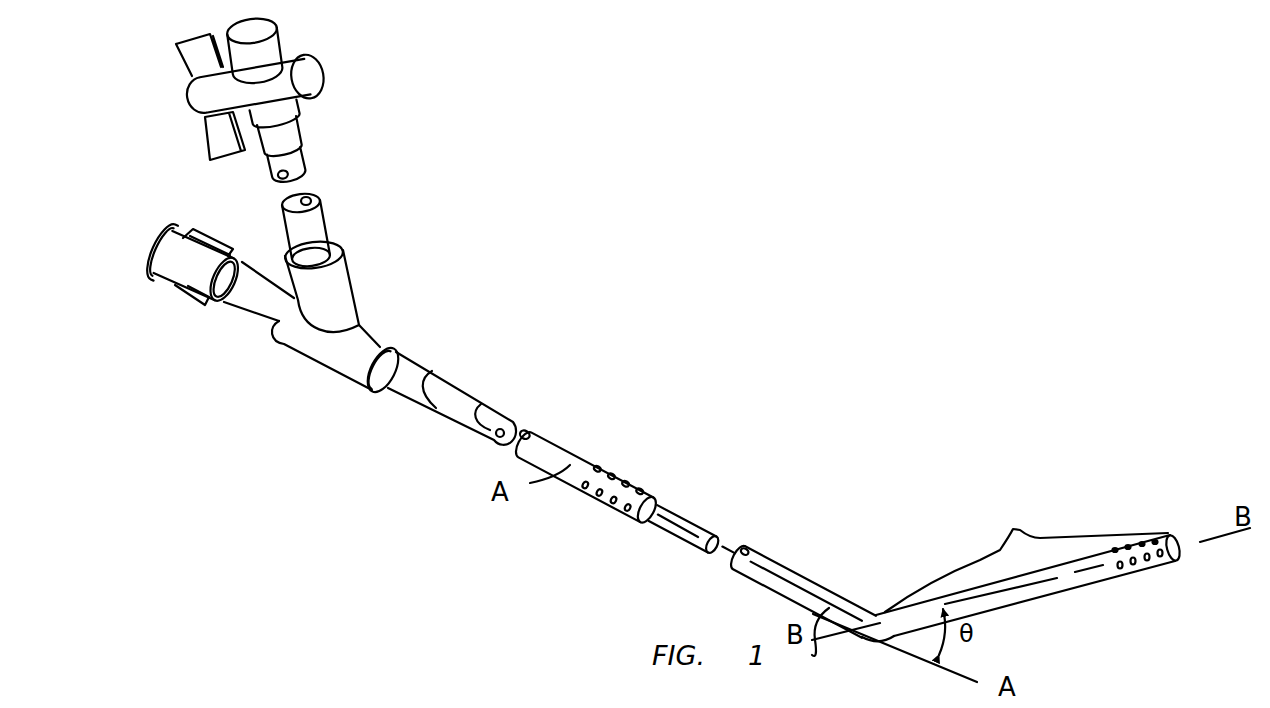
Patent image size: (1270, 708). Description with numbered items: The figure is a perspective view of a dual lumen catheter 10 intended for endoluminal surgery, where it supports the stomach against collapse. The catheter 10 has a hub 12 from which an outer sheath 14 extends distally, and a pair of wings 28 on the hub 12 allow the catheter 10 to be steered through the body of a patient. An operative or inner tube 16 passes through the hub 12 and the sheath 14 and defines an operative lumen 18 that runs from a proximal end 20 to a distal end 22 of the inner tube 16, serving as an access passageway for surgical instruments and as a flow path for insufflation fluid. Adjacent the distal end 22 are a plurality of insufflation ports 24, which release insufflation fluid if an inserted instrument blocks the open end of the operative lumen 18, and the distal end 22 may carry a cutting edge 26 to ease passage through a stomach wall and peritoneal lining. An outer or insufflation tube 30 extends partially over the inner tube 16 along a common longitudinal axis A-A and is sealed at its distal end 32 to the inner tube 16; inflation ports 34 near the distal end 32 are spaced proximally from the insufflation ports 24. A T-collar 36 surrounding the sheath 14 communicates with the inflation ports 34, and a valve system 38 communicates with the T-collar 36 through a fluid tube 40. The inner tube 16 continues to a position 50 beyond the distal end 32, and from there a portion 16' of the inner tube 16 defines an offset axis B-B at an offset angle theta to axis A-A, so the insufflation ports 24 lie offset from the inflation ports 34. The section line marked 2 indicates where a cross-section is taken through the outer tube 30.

The dual lumen catheter 10 is at (612, 72).
The hub 12 is at (172, 270).
The outer sheath 14 is at (258, 310).
The inner tube 16 is at (984, 610).
The portion of the inner tube 16' is at (1026, 553).
The operative lumen 18 is at (1185, 542).
The proximal end 20 is at (137, 244).
The distal end 22 is at (1173, 562).
The insufflation ports 24 is at (1148, 561).
The cutting edge 26 is at (1173, 538).
The wings 28 is at (207, 230).
The outer tube 30 is at (543, 435).
The distal end 32 is at (662, 500).
The inflation ports 34 is at (617, 477).
The T-collar 36 is at (363, 337).
The valve system 38 is at (303, 133).
The fluid tube 40 is at (323, 220).
The position 50 is at (873, 627).
The section line 2- 2 is at (590, 452).